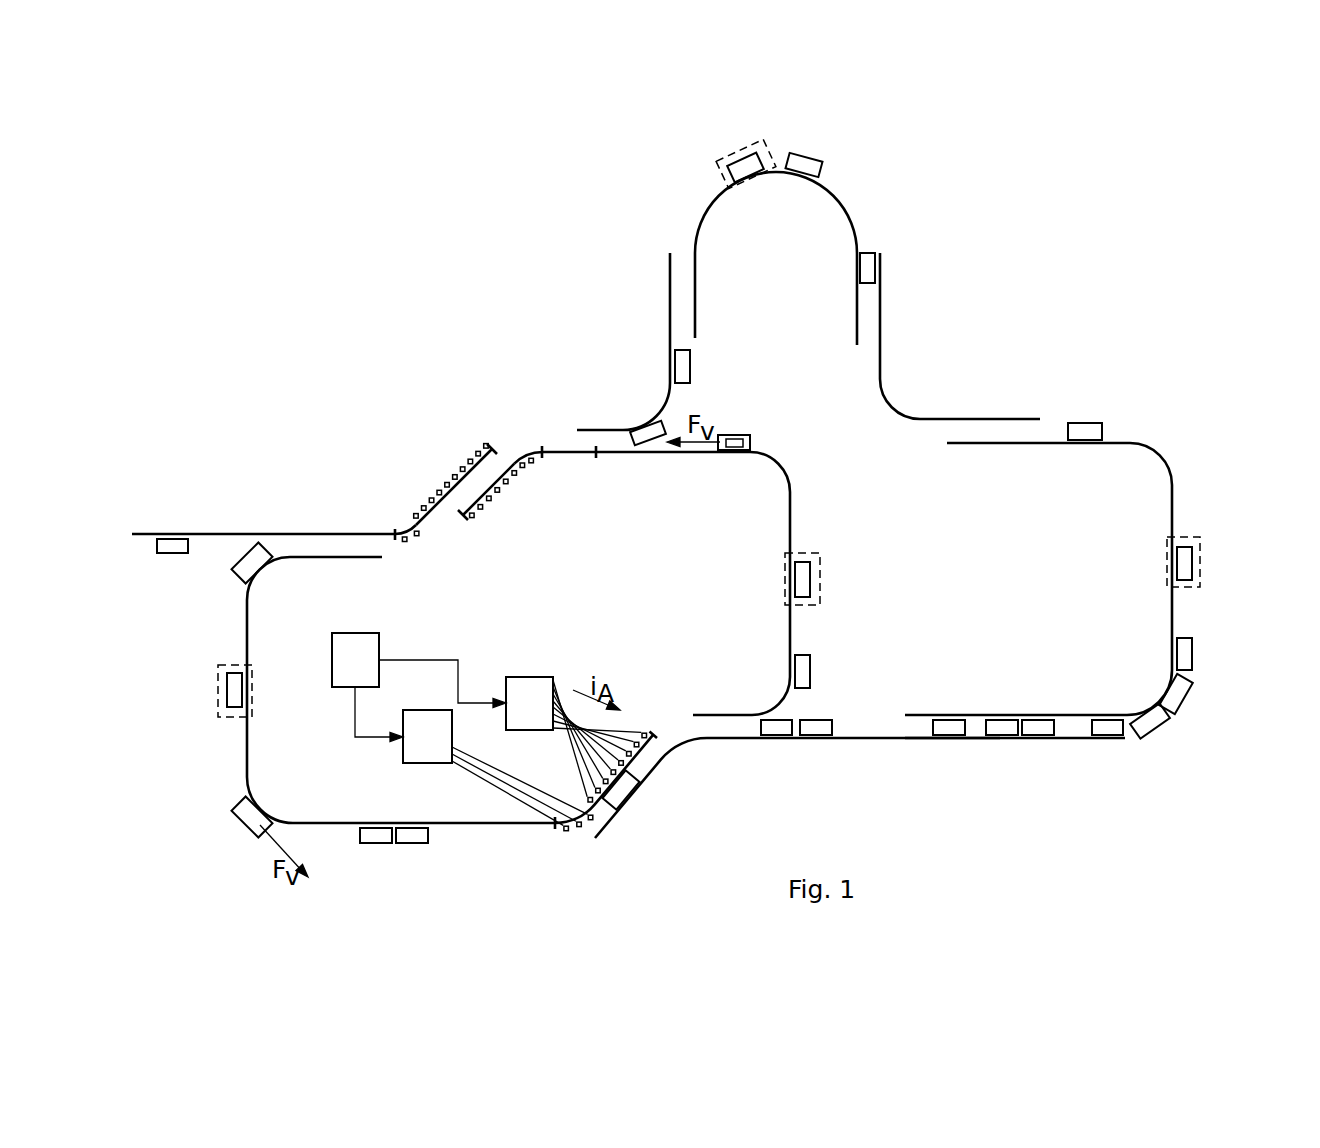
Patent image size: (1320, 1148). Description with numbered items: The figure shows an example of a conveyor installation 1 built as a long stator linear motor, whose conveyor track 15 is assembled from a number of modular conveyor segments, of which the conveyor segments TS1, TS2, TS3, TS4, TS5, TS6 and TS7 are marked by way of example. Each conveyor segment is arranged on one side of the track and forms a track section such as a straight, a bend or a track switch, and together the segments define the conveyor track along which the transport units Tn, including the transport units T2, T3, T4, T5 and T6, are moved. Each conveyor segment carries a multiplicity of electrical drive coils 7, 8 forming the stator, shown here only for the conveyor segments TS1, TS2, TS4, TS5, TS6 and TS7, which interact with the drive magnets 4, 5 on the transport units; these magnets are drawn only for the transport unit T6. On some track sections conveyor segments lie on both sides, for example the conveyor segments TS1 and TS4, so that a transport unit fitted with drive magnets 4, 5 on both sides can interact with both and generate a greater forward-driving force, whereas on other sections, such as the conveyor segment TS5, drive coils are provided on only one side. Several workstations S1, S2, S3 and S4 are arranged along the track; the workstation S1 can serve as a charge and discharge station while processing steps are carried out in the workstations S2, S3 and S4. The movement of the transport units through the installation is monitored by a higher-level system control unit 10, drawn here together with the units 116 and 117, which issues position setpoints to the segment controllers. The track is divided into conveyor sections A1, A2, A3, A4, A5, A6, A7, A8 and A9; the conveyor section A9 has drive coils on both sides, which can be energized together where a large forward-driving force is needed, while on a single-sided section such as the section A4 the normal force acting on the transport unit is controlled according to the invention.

The conveyor installation 1 is at (946, 761).
The drive magnet 4 is at (738, 435).
The drive magnet 5 is at (733, 451).
The drive coil 7 is at (416, 482).
The drive coil 8 is at (534, 478).
The system control unit 10 is at (419, 687).
The conveyor track 15 is at (1152, 428).
The control unit 116 is at (495, 767).
The control unit 117 is at (573, 737).
The track section A1 is at (503, 826).
The track section A2 is at (868, 740).
The track section A3 is at (792, 517).
The track section A4 is at (1174, 488).
The track section A5 is at (882, 342).
The track section A6 is at (845, 205).
The track section A7 is at (668, 287).
The track section A8 is at (332, 532).
The conveyor section A9 is at (1035, 687).
The workstation S1 is at (217, 672).
The workstation S2 is at (821, 580).
The workstation S3 is at (1193, 560).
The workstation S4 is at (717, 153).
The transport unit T2 is at (237, 688).
The transport unit T3 is at (235, 813).
The transport unit T4 is at (385, 844).
The transport unit T5 is at (777, 736).
The transport unit T6 is at (752, 441).
The transport unit Tn is at (167, 545).
The conveyor segment TS1 is at (465, 525).
The conveyor segment TS2 is at (522, 455).
The conveyor segment TS3 is at (581, 457).
The conveyor segment TS4 is at (483, 443).
The conveyor segment TS5 is at (413, 522).
The conveyor segment TS6 is at (577, 822).
The conveyor segment TS7 is at (637, 753).